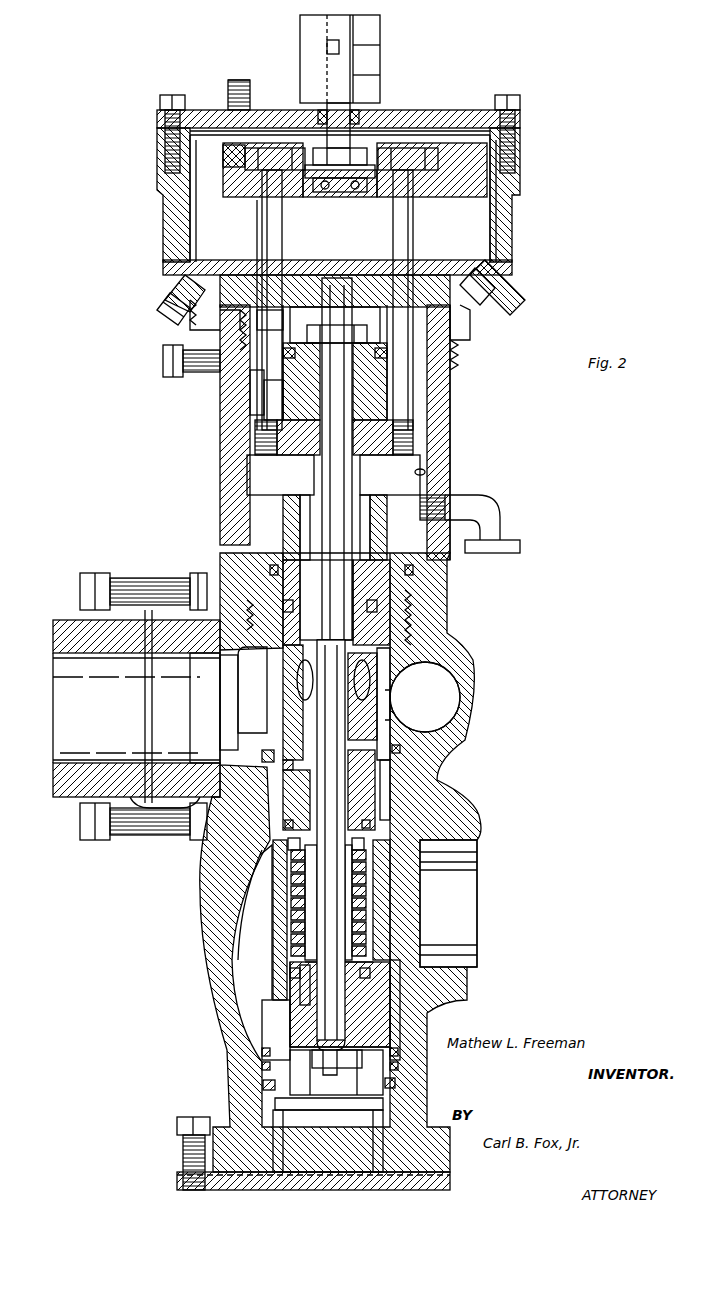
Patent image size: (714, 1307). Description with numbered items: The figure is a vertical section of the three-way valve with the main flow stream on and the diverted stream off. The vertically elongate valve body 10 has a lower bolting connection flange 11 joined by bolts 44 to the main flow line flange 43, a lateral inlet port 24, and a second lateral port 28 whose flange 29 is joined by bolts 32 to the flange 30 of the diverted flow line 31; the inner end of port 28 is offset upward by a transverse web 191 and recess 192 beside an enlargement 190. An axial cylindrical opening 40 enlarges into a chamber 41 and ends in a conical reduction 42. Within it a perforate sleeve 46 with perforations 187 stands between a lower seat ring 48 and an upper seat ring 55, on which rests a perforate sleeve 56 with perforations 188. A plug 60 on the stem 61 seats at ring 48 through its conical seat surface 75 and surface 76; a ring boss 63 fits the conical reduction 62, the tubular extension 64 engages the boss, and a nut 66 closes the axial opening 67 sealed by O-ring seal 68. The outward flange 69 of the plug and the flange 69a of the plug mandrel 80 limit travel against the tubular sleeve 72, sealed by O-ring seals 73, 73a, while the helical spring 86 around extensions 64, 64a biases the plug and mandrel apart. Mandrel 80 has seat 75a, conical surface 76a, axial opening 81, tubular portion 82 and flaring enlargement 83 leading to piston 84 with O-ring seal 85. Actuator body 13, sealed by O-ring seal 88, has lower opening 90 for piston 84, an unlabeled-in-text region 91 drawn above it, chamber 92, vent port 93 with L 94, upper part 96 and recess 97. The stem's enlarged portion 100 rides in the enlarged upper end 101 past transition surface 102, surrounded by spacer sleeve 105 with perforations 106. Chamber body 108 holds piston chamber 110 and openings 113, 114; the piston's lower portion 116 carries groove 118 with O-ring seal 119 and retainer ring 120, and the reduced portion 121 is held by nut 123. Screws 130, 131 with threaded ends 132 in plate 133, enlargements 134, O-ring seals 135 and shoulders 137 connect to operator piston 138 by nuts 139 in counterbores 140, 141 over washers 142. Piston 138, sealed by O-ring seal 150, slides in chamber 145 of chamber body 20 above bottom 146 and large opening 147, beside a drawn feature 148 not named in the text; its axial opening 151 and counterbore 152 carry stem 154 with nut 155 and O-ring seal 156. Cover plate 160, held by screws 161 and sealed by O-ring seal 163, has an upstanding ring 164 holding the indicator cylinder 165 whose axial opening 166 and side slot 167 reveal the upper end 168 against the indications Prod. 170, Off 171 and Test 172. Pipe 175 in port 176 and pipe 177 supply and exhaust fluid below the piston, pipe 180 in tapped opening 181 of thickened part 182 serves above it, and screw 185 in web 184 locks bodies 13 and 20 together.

The valve body 10 is at (200, 893).
The lower bolting connection flange 11 is at (180, 1140).
The actuator body 13 is at (452, 403).
The chamber body 20 is at (520, 240).
The lateral port 24 is at (478, 960).
The second lateral port 28 is at (240, 750).
The flange 29 is at (165, 573).
The flange 30 is at (120, 573).
The diverted flow line 31 is at (62, 620).
The bolts 32 is at (83, 590).
The axial cylindrical opening 40 is at (270, 1022).
The chamber 41 is at (230, 925).
The conical reduction 42 is at (375, 1120).
The connection flange 43 is at (175, 1178).
The bolts 44 is at (180, 1127).
The perforate cylindrical sleeve 46 is at (395, 915).
The seat ring 48 is at (395, 1085).
The second seat ring 55 is at (400, 768).
The perforate sleeve 56 is at (392, 720).
The plug 60 is at (290, 1010).
The stem 61 is at (336, 782).
The conical reduction 62 is at (300, 940).
The ring boss 63 is at (295, 920).
The tubular extension 64 is at (380, 945).
The extension 64a is at (370, 850).
The nut 66 is at (330, 1095).
The axial opening 67 is at (300, 1000).
The O-ring seal 68 is at (400, 1045).
The outward flange 69 is at (395, 1020).
The flange 69a is at (400, 785).
The cylindrical tubular sleeve 72 is at (395, 962).
The O-ring seal 73 is at (290, 975).
The O-ring seal 73a is at (372, 835).
The conical seat surface 75 is at (265, 1045).
The seat 75a is at (265, 758).
The conical surface 76 is at (262, 1068).
The conical surface 76a is at (285, 760).
The plug mandrel 80 is at (370, 810).
The axial opening 81 is at (352, 720).
The tubular portion 82 is at (380, 690).
The flaring enlargement 83 is at (290, 670).
The piston 84 is at (378, 605).
The O-ring seal 85 is at (420, 590).
The helical spring 86 is at (300, 893).
The O-ring seal 88 is at (413, 572).
The lower opening 90 is at (412, 620).
The stem guide 91 is at (383, 535).
The cylindrical chamber 92 is at (425, 470).
The tapped vent port 93 is at (430, 490).
The L 94 is at (505, 505).
The upper part 96 is at (452, 358).
The circular recess 97 is at (450, 332).
The enlarged portion 100 is at (310, 473).
The enlarged upper end 101 is at (322, 640).
The conical transition surface 102 is at (318, 660).
The tubular sleeve 105 is at (290, 515).
The perforations 106 is at (418, 470).
The chamber body 108 is at (240, 340).
The piston chamber 110 is at (312, 280).
The vertical cylindrical opening 113 is at (265, 385).
The vertical cylindrical opening 114 is at (452, 385).
The lower portion 116 is at (283, 405).
The circular groove 118 is at (290, 350).
The O-ring seal 119 is at (225, 322).
The retainer ring 120 is at (290, 372).
The reduced portion 121 is at (305, 405).
The nut 123 is at (375, 280).
The screw 130 is at (280, 232).
The screw 131 is at (393, 235).
The reduced threaded lower end 132 is at (257, 430).
The disk-shaped plate 133 is at (418, 455).
The enlarged portion 134 is at (262, 260).
The O-ring seal 135 is at (180, 318).
The upwardly-facing shoulder 137 is at (262, 200).
The operator piston 138 is at (440, 160).
The nut 139 is at (268, 145).
The counterbore 140 is at (250, 170).
The counterbore 141 is at (455, 145).
The steel washer 142 is at (295, 195).
The cylindrical chamber 145 is at (512, 218).
The bottom 146 is at (470, 272).
The large opening 147 is at (300, 275).
The guide 148 is at (380, 278).
The O-ring seal 150 is at (522, 190).
The axial opening 151 is at (350, 160).
The lower counterbore 152 is at (375, 197).
The stem 154 is at (318, 120).
The nut 155 is at (338, 197).
The O-ring seal 156 is at (345, 125).
The cover plate 160 is at (500, 110).
The screws 161 is at (508, 97).
The O-ring seal 163 is at (335, 95).
The upstanding ring 164 is at (362, 100).
The indicator cylinder 165 is at (300, 20).
The axial cylindrical opening 166 is at (382, 22).
The side slot 167 is at (300, 50).
The upper end 168 is at (330, 45).
The indication "Prod." 170 is at (392, 36).
The indication "Off" 171 is at (385, 60).
The indication "Test" 172 is at (385, 85).
The pipe 175 is at (175, 300).
The angular tapped port 176 is at (175, 280).
The pipe 177 is at (495, 305).
The pipe 180 is at (235, 105).
The tapped opening 181 is at (178, 84).
The thickened part 182 is at (200, 110).
The downwardly projecting web 184 is at (170, 368).
The screw 185 is at (163, 352).
The perforations 187 is at (250, 862).
The perforations 188 is at (385, 700).
The enlargement 190 is at (445, 700).
The transverse web 191 is at (220, 730).
The recess 192 is at (245, 660).